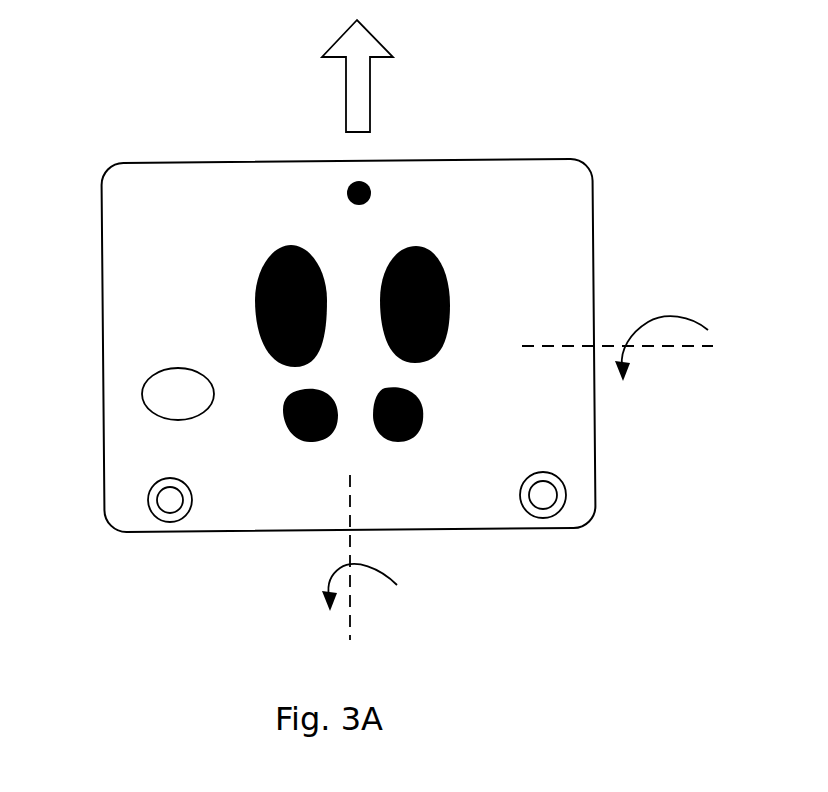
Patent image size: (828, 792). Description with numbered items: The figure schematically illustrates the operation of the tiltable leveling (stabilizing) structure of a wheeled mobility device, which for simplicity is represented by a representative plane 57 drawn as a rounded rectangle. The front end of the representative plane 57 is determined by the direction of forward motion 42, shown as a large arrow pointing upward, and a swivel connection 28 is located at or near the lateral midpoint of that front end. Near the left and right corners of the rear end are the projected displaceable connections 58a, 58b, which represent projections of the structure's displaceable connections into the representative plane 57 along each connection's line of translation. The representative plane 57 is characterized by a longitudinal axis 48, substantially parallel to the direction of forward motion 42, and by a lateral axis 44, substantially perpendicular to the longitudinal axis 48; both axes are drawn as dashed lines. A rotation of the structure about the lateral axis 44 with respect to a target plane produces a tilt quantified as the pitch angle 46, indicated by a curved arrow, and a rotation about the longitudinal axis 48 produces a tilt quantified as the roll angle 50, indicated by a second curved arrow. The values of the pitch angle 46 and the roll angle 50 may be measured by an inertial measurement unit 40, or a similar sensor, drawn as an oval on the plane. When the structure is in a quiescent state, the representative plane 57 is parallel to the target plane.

The swivel connection 28 is at (371, 185).
The inertial measurement unit 40 is at (142, 390).
The direction of forward motion 42 is at (345, 97).
The lateral axis 44 is at (658, 347).
The pitch angle 46 is at (655, 317).
The longitudinal axis 48 is at (350, 635).
The roll angle 50 is at (378, 573).
The representative plane 57 is at (103, 245).
The projected displaceable connection 58a is at (152, 513).
The projected displaceable connection 58b is at (562, 507).